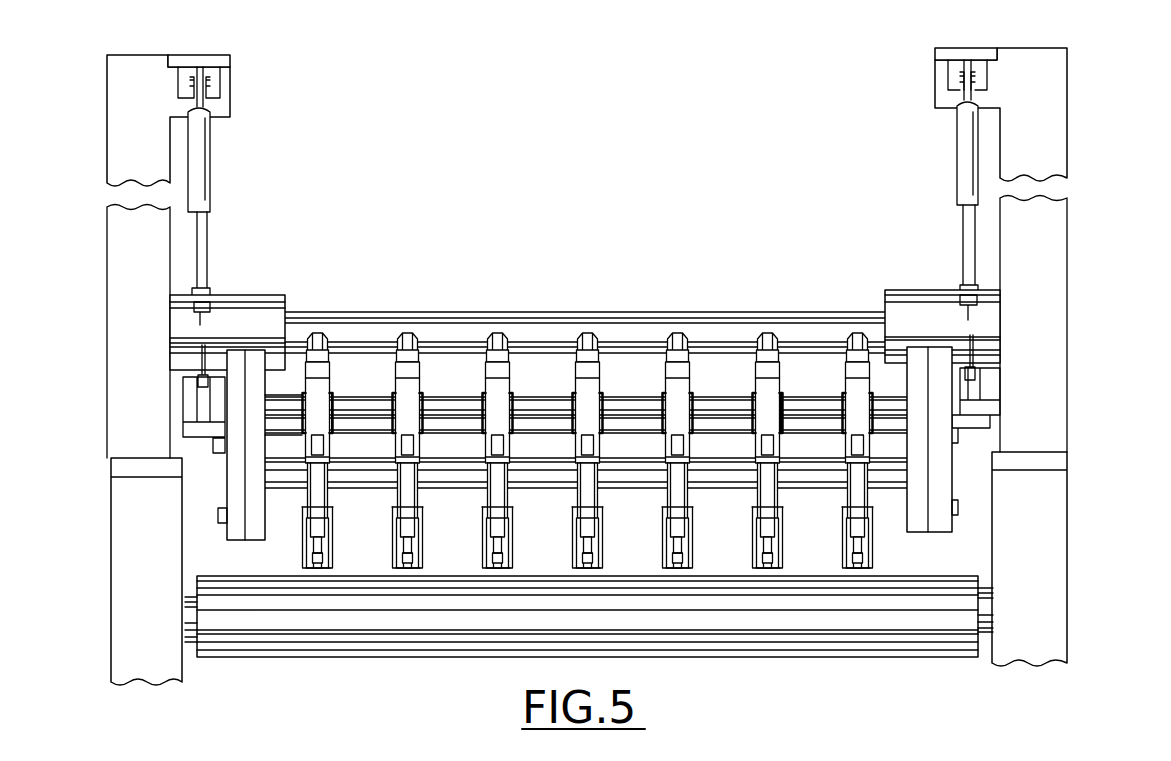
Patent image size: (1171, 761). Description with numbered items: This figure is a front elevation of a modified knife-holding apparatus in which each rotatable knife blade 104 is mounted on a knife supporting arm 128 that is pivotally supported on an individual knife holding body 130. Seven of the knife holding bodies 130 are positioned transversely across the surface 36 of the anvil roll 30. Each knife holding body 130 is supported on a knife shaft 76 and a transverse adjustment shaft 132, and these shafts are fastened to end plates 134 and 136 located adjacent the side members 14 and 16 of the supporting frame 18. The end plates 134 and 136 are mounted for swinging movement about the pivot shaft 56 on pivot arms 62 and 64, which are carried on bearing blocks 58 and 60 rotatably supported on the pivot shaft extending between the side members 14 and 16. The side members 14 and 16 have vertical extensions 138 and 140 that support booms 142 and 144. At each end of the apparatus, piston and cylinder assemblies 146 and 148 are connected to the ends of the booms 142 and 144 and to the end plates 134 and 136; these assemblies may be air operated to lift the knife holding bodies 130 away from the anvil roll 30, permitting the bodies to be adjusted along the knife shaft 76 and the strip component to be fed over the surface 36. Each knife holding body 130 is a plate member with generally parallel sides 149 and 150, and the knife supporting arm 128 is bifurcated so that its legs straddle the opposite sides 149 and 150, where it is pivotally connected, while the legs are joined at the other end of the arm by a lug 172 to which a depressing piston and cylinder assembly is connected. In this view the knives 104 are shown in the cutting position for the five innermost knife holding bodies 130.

The side member 14 is at (1068, 432).
The side member 16 is at (110, 425).
The supporting frame 18 is at (1093, 306).
The anvil roll 30 is at (955, 638).
The surface of the anvil roll 36 is at (905, 657).
The pivot shaft 56 is at (540, 325).
The bearing block 58 is at (905, 293).
The bearing block 60 is at (272, 312).
The pivot arm 62 is at (228, 350).
The pivot arm 64 is at (952, 350).
The knife shaft 76 is at (698, 468).
The rotatable knife blade 104 is at (406, 572).
The knife supporting arm 128 is at (330, 552).
The knife holding body 130 is at (322, 388).
The transverse adjustment shaft 132 is at (793, 405).
The end plate 134 is at (258, 535).
The end plate 136 is at (912, 528).
The vertical extension 138 is at (1058, 155).
The vertical extension 140 is at (120, 140).
The boom 142 is at (975, 55).
The boom 144 is at (212, 58).
The piston and cylinder assembly 146 is at (958, 152).
The piston and cylinder assembly 148 is at (205, 178).
The side of the knife holding body 149 is at (333, 412).
The side of the knife holding body 150 is at (310, 410).
The lug 172 is at (852, 565).